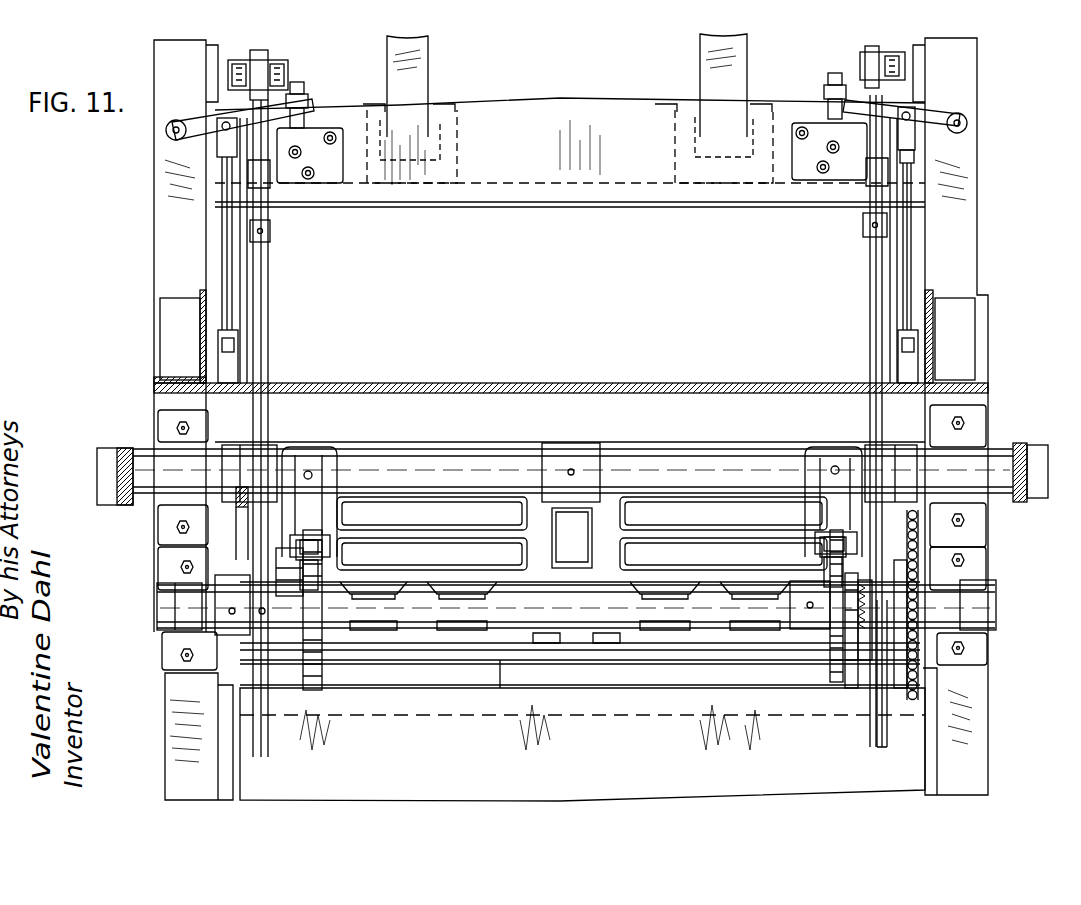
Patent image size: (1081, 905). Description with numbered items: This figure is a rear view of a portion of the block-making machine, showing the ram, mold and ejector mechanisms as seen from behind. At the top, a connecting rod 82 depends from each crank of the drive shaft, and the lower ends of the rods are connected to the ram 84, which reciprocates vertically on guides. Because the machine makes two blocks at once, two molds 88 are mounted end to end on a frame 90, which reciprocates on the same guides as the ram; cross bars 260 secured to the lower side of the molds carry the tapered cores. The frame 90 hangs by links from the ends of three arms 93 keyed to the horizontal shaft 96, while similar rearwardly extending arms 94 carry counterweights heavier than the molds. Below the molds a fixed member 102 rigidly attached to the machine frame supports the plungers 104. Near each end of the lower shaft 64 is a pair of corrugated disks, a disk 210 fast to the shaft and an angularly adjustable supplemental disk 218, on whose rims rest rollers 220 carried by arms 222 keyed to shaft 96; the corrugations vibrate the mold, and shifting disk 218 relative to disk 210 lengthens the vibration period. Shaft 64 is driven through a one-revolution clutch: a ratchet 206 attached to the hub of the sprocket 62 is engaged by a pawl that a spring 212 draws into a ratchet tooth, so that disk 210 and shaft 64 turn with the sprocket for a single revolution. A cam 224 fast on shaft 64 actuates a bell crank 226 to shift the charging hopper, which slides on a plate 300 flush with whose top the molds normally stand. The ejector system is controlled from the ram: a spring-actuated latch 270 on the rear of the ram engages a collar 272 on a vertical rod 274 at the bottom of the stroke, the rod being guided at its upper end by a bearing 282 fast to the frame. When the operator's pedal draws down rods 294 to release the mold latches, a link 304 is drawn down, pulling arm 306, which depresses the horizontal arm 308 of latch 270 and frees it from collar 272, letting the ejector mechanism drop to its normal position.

The sprocket 62 is at (920, 677).
The shaft 64 is at (643, 610).
The connecting rod 82 is at (412, 66).
The ram 84 is at (523, 117).
The mold 88 is at (448, 521).
The frame 90 is at (573, 567).
The arm 93 is at (258, 467).
The arm 94 is at (129, 497).
The horizontal shaft 96 is at (698, 466).
The fixed member 102 is at (425, 675).
The plunger 104 is at (500, 647).
The ratchet 206 is at (862, 640).
The disk 210 is at (325, 682).
The spring 212 is at (903, 678).
The supplemental disk 218 is at (302, 648).
The roller 220 is at (312, 546).
The arm 222 is at (325, 508).
The cam 224 is at (255, 638).
The bell crank 226 is at (240, 508).
The cross bar 260 is at (460, 588).
The spring-actuated latch 270 is at (268, 195).
The collar 272 is at (272, 236).
The vertical rod 274 is at (270, 290).
The bearing 282 is at (258, 68).
The rod 294 is at (878, 732).
The plate 300 is at (437, 385).
The link 304 is at (226, 260).
The arm 306 is at (200, 130).
The horizontal arm 308 is at (300, 116).